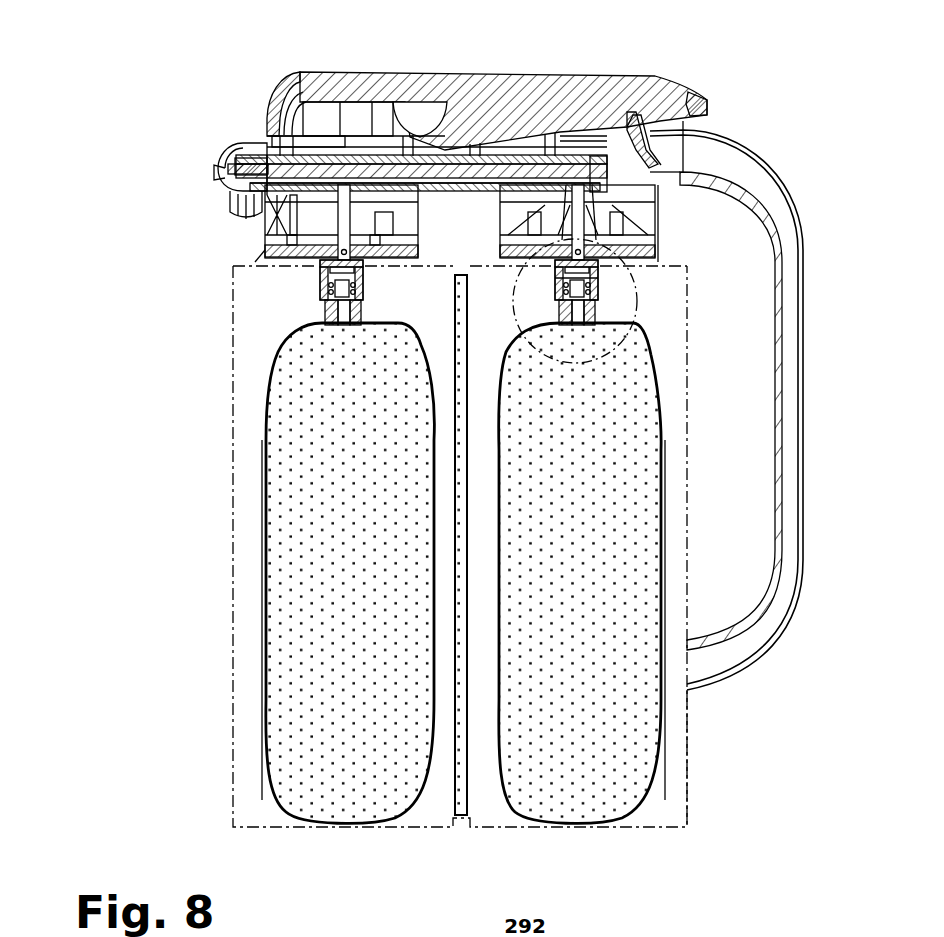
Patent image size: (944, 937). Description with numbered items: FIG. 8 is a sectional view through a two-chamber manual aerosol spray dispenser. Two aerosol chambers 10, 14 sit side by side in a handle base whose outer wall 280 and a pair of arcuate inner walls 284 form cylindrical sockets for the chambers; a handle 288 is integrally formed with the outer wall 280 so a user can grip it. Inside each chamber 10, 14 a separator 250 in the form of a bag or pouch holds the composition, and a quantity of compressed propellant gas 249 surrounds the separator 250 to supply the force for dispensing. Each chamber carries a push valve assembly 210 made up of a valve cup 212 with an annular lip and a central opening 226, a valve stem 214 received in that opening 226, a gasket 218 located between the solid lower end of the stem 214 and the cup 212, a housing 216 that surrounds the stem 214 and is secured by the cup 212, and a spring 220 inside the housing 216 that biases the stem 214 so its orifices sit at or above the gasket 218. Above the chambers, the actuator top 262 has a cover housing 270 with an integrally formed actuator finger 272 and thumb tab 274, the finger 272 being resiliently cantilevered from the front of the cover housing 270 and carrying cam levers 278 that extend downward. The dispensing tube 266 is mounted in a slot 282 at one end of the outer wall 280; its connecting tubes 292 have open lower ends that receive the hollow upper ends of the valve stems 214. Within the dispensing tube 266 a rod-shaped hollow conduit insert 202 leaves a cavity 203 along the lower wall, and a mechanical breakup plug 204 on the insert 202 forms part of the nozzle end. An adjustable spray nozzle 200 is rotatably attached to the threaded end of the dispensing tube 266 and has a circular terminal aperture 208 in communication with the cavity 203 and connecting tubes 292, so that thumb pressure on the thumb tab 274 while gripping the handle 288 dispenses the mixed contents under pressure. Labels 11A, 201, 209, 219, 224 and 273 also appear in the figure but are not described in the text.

The chamber 10 is at (262, 668).
The chamber 14 is at (692, 713).
The detail region 11A is at (652, 372).
The adjustable spray nozzle 200 is at (240, 182).
The spout 201 is at (232, 207).
The hollow conduit insert 202 is at (300, 150).
The cavity 203 is at (238, 212).
The mechanical breakup plug 204 is at (265, 141).
The terminal aperture 208 is at (236, 168).
The divider 209 is at (458, 752).
The push valve assembly 210 is at (320, 300).
The valve cup 212 is at (320, 270).
The valve stem 214 is at (272, 232).
The housing 216 is at (330, 318).
The gasket 218 is at (316, 290).
The collar 219 is at (596, 280).
The spring 220 is at (324, 308).
The neck 224 is at (366, 272).
The opening 226 is at (280, 249).
The compressed propellant gas 249 is at (258, 516).
The separator 250 is at (264, 745).
The actuator top 262 is at (265, 111).
The dispensing tube 266 is at (599, 148).
The cover housing 270 is at (268, 98).
The actuator finger 272 is at (668, 122).
The latch 273 is at (655, 142).
The thumb tab 274 is at (710, 106).
The cam levers 278 is at (427, 112).
The outer wall 280 is at (268, 258).
The slot 282 is at (335, 157).
The arcuate inner walls 284 is at (438, 135).
The handle 288 is at (801, 312).
The connecting tubes 292 is at (578, 186).